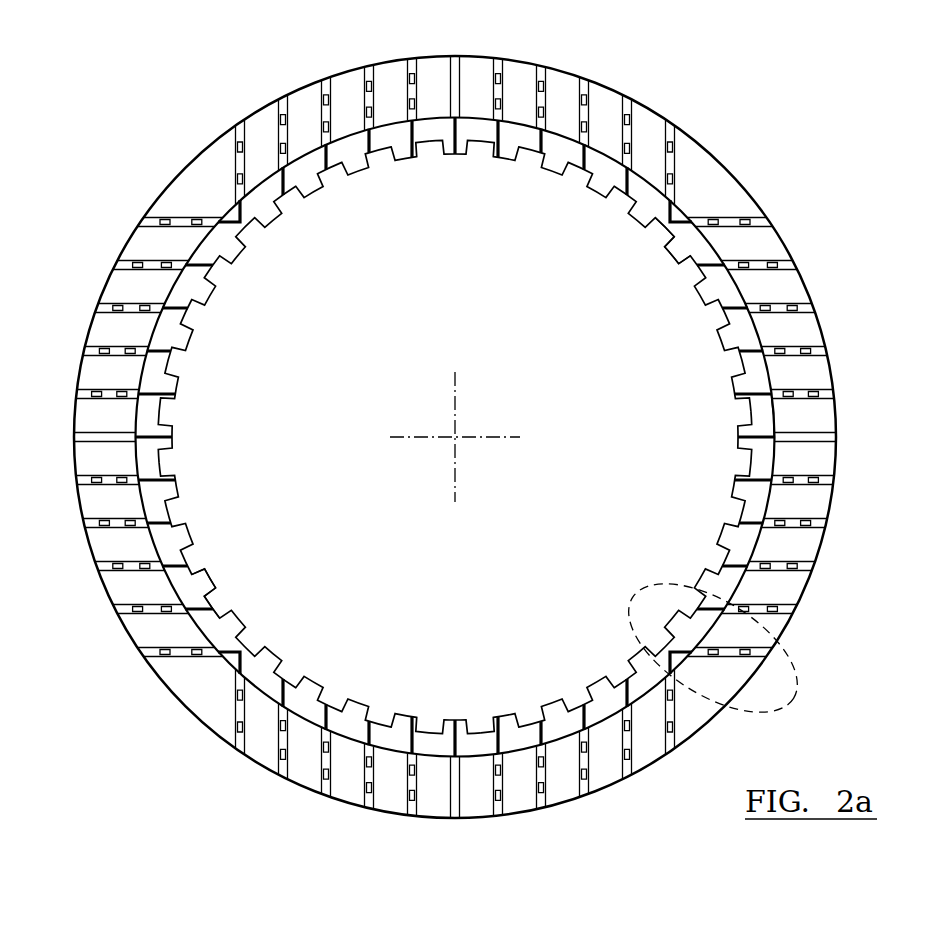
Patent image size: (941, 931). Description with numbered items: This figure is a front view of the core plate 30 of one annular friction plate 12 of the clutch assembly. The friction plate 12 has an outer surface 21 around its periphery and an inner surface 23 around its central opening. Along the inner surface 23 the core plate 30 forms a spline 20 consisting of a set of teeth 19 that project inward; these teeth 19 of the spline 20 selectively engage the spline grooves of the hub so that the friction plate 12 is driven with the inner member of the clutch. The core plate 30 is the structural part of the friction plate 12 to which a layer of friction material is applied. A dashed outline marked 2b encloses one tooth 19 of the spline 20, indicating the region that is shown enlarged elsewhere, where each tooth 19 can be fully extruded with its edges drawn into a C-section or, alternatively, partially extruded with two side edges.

The friction plate 12 is at (152, 134).
The teeth 19 is at (221, 586).
The spline 20 is at (671, 278).
The outer surface 21 is at (848, 421).
The inner surface 23 is at (762, 413).
The core plate 30 is at (730, 167).
The detail region of FIG. 2b is at (793, 656).